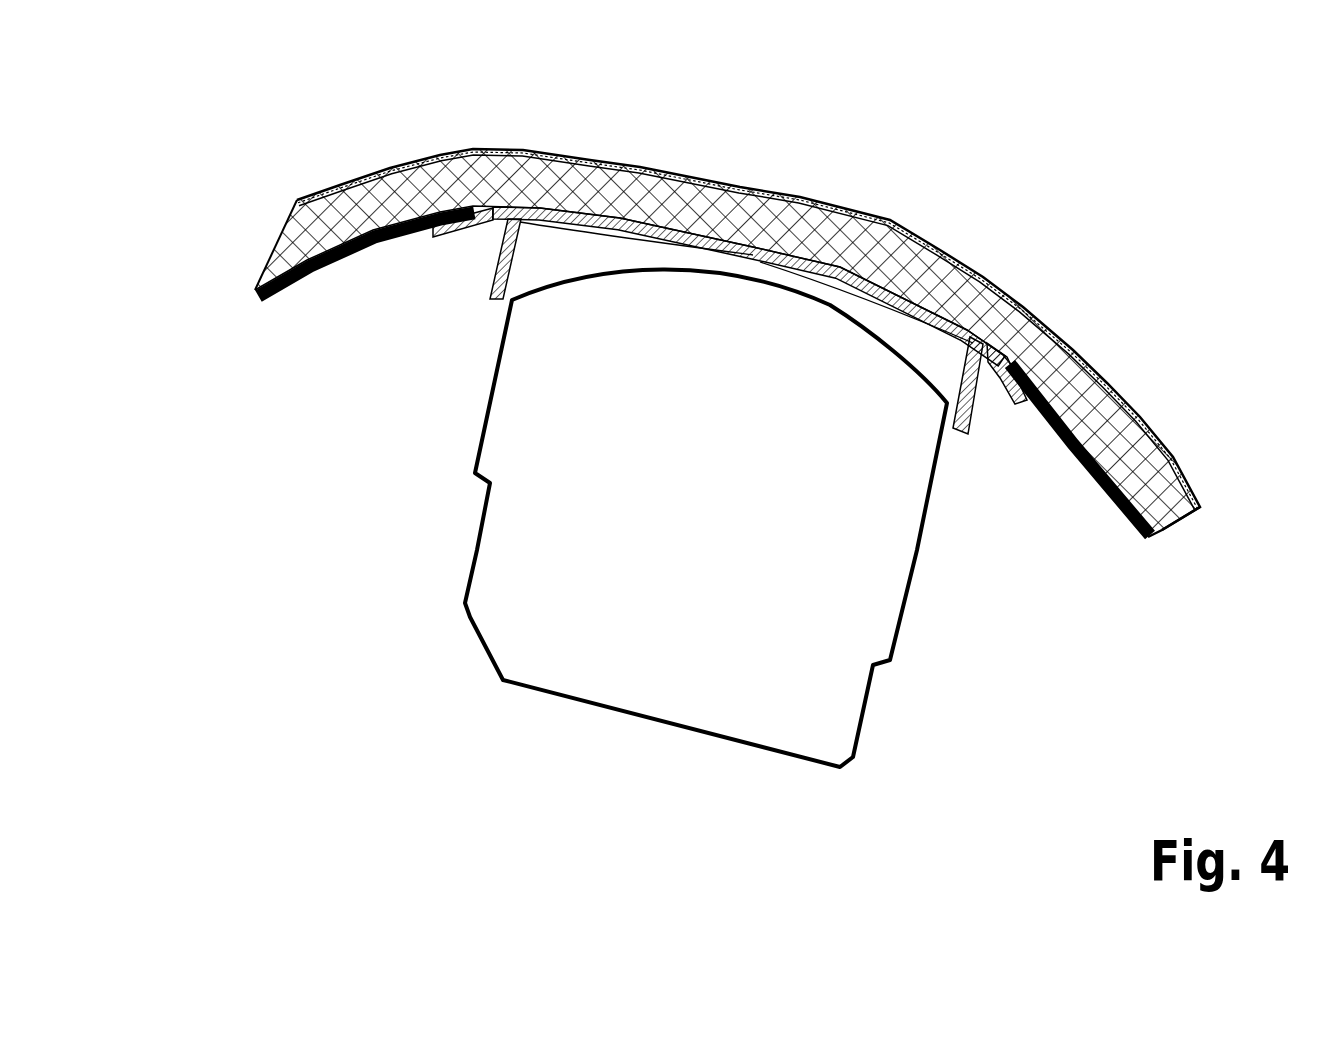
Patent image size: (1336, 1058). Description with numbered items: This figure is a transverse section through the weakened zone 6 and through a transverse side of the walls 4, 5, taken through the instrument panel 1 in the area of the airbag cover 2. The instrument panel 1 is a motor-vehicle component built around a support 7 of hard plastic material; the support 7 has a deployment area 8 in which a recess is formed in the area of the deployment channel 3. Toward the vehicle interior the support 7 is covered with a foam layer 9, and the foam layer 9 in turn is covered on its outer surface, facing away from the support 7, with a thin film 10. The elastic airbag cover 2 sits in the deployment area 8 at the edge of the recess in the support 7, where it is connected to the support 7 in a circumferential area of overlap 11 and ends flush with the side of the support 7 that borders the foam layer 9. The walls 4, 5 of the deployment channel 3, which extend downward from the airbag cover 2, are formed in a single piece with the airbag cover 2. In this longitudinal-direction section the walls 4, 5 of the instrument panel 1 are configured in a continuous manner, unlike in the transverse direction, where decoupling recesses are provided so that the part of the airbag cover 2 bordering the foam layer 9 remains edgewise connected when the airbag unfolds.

The instrument panel 1 is at (282, 174).
The airbag cover 2 is at (685, 243).
The deployment channel 3 is at (712, 521).
The wall 4 is at (493, 271).
The wall 5 is at (975, 405).
The weakened zone 6 is at (760, 263).
The support 7 is at (1145, 530).
The deployment area 8 is at (890, 203).
The foam layer 9 is at (538, 177).
The thin film 10 is at (836, 206).
The area of overlap 11 is at (459, 241).